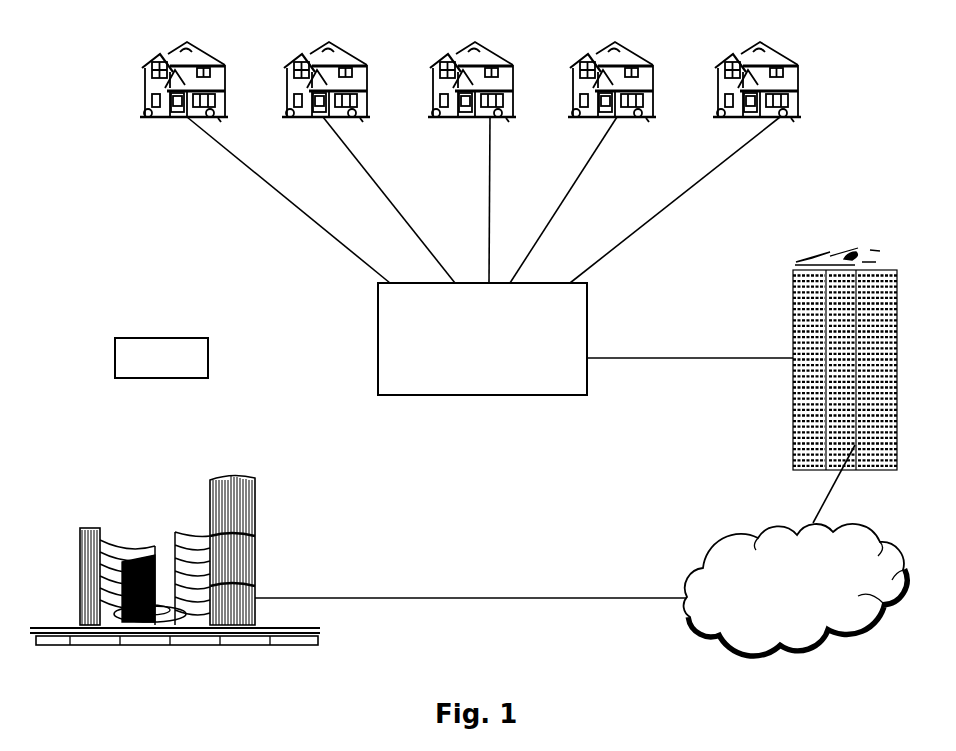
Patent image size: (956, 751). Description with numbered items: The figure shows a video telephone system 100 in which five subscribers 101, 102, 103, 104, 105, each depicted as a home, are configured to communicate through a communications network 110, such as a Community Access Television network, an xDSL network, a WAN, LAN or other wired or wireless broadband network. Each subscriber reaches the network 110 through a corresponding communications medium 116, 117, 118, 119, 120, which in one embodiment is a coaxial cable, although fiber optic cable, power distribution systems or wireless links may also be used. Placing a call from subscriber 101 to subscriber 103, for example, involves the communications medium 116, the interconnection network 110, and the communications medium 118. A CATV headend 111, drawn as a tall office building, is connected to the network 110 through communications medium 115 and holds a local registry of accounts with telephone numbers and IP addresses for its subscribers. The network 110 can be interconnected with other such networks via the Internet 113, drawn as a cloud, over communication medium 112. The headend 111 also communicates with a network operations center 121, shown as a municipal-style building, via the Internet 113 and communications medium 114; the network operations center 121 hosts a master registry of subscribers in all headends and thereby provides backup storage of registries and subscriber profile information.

The video telephone system 100 is at (161, 358).
The subscriber 101 is at (150, 57).
The subscriber 102 is at (305, 56).
The subscriber 103 is at (456, 56).
The subscriber 104 is at (586, 56).
The subscriber 105 is at (797, 57).
The communications network 110 is at (482, 339).
The CATV headend 111 is at (791, 413).
The communication medium 112 is at (811, 506).
The Internet 113 is at (795, 589).
The communications medium 114 is at (455, 596).
The communications medium 115 is at (700, 356).
The communications medium 116 is at (342, 246).
The communications medium 117 is at (360, 168).
The communications medium 118 is at (488, 188).
The communications medium 119 is at (587, 169).
The communications medium 120 is at (667, 207).
The network operations center 121 is at (207, 522).